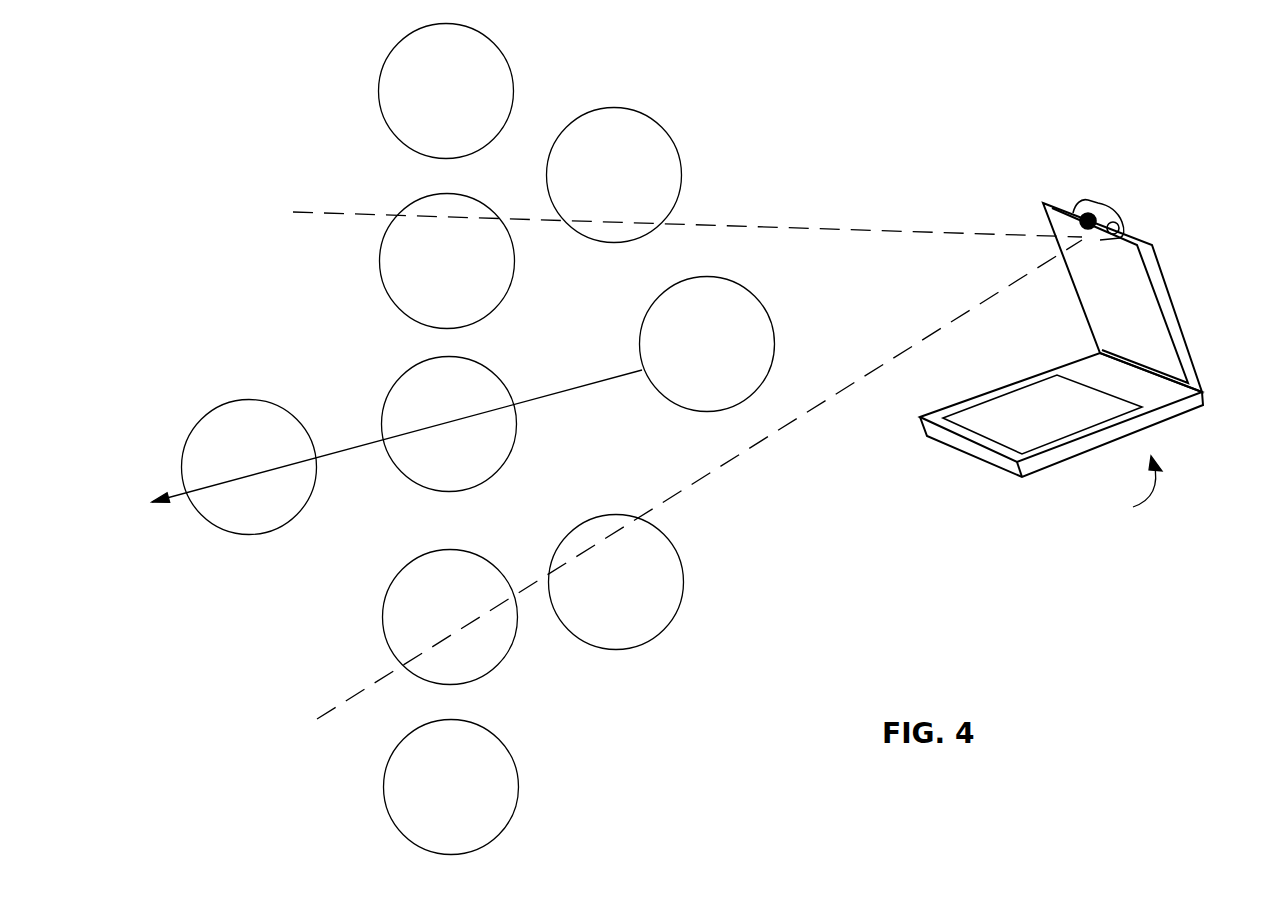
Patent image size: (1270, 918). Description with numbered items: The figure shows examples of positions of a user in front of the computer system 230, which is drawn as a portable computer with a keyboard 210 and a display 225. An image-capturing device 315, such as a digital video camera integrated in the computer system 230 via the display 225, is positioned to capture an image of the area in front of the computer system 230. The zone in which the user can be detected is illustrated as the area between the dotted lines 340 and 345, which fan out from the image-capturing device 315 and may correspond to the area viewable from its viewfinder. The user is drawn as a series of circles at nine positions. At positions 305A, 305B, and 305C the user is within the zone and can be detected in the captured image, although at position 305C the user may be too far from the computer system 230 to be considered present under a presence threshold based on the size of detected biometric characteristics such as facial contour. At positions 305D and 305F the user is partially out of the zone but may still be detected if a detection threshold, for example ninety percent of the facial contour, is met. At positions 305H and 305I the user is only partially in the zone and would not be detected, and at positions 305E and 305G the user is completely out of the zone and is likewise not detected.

The user position A 305A is at (707, 344).
The user position B 305B is at (449, 424).
The user position C 305C is at (249, 467).
The user position D 305D is at (447, 261).
The user position E 305E is at (446, 91).
The user position F 305F is at (450, 617).
The user position G 305G is at (451, 787).
The user position H 305H is at (614, 175).
The user position I 305I is at (616, 582).
The dotted line 340 is at (677, 211).
The dotted line 345 is at (691, 495).
The image-capturing device 315 is at (1083, 205).
The display 225 is at (1152, 338).
The keyboard 210 is at (1042, 414).
The computer system 230 is at (1122, 485).